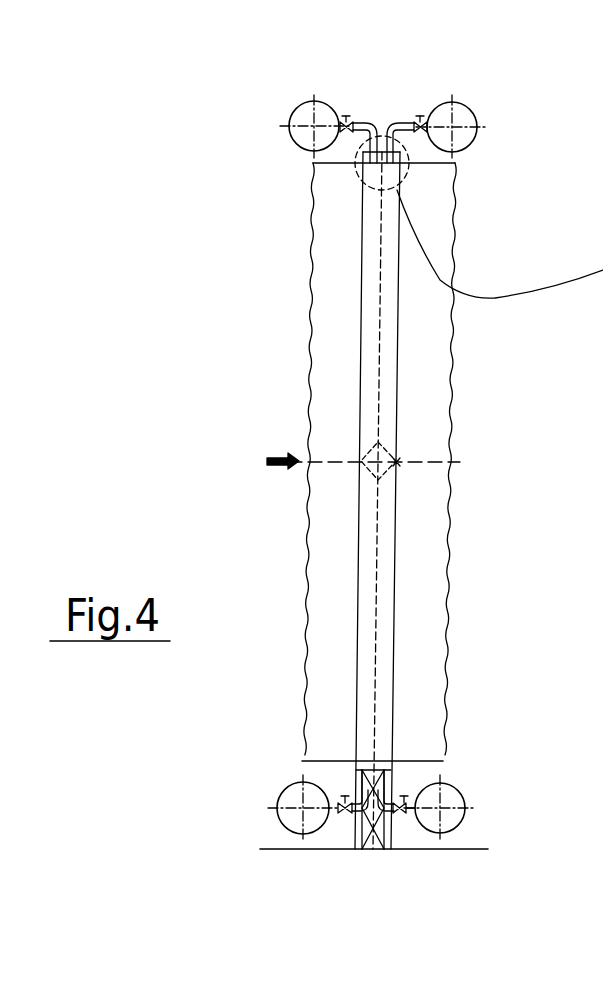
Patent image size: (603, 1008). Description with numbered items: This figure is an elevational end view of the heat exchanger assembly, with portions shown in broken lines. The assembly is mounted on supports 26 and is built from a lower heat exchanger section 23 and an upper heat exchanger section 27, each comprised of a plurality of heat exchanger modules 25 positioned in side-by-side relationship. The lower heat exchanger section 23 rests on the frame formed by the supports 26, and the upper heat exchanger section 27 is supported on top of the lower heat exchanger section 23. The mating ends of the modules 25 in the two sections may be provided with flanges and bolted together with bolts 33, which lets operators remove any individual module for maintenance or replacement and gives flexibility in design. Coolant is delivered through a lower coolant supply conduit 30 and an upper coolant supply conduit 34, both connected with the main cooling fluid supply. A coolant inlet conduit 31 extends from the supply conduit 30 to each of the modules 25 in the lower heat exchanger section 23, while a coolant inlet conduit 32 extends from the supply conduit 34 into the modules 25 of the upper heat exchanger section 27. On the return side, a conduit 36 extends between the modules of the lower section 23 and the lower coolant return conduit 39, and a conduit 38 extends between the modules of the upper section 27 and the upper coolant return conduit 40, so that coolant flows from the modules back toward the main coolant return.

The lower heat exchanger section 23 is at (401, 572).
The heat exchanger module 25 is at (367, 304).
The supports 26 is at (377, 835).
The upper heat exchanger section 27 is at (401, 345).
The lower coolant supply conduit 30 is at (280, 797).
The coolant inlet conduit 31 is at (356, 822).
The coolant inlet conduit 32 is at (366, 120).
The bolts 33 is at (360, 461).
The upper coolant supply conduit 34 is at (301, 107).
The conduit 36 is at (390, 801).
The conduit 38 is at (390, 120).
The lower coolant return conduit 39 is at (462, 797).
The upper coolant return conduit 40 is at (468, 103).